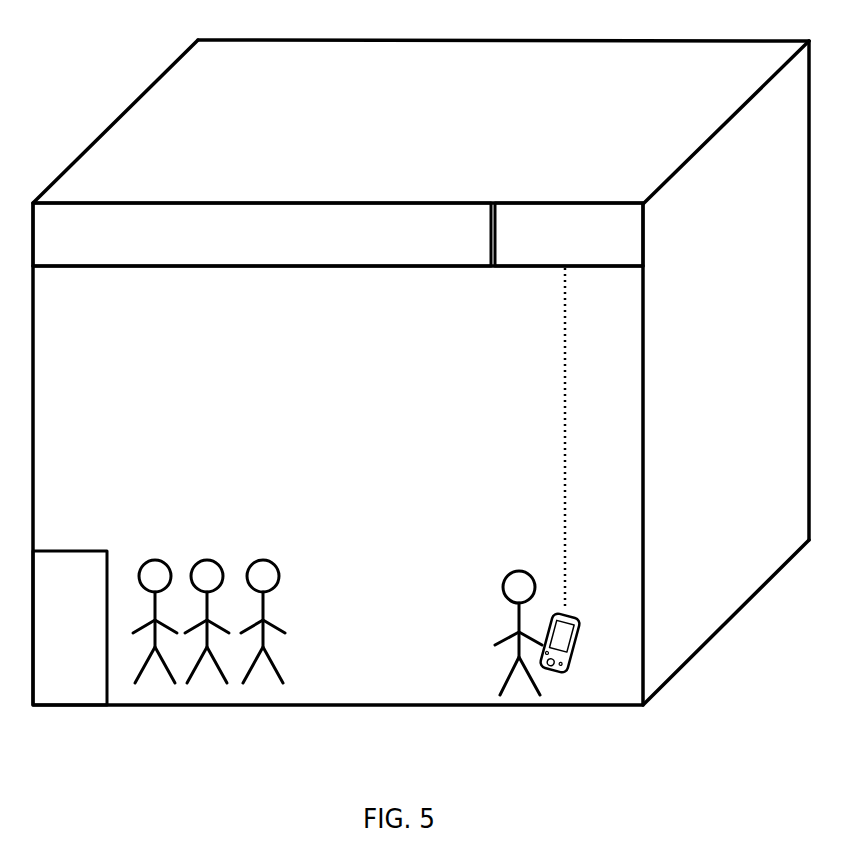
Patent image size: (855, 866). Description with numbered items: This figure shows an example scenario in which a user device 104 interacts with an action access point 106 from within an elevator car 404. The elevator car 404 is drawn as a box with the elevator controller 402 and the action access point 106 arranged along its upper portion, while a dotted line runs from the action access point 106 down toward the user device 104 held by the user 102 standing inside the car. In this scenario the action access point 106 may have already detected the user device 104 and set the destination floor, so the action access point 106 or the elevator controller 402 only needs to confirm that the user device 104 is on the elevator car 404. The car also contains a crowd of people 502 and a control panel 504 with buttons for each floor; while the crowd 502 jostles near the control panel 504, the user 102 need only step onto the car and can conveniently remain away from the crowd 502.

The user 102 is at (488, 614).
The user device 104 is at (586, 642).
The action access point 106 is at (569, 396).
The elevator controller 402 is at (262, 224).
The elevator car 404 is at (421, 360).
The crowd of people 502 is at (214, 595).
The control panel 504 is at (74, 615).